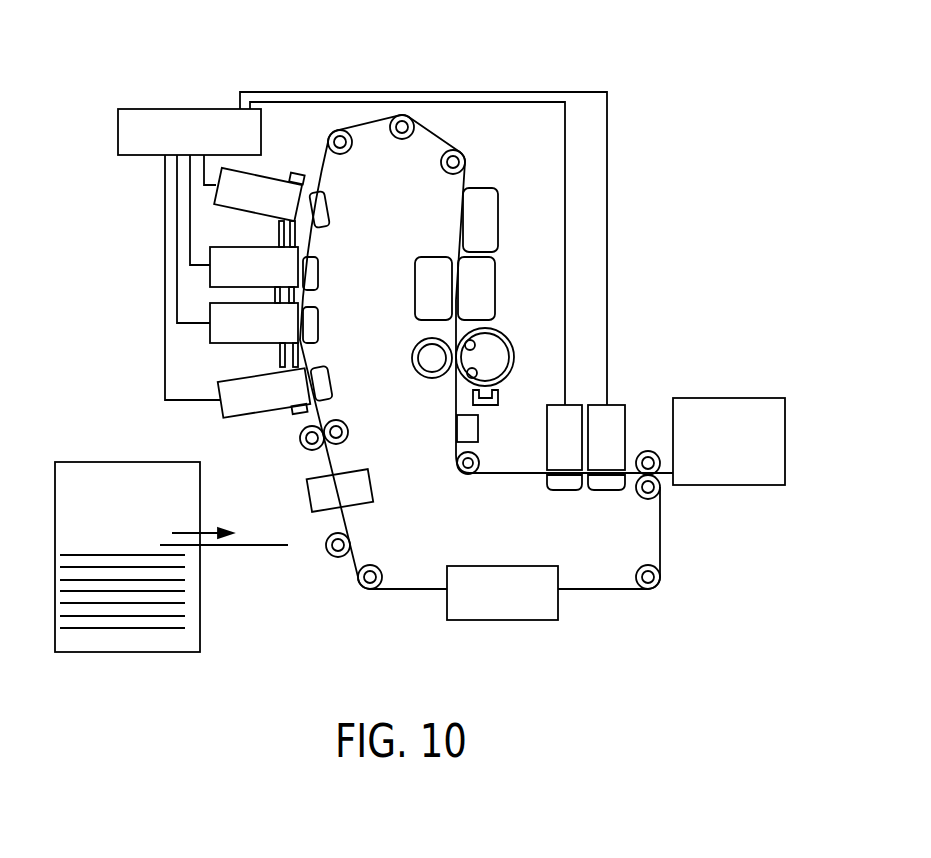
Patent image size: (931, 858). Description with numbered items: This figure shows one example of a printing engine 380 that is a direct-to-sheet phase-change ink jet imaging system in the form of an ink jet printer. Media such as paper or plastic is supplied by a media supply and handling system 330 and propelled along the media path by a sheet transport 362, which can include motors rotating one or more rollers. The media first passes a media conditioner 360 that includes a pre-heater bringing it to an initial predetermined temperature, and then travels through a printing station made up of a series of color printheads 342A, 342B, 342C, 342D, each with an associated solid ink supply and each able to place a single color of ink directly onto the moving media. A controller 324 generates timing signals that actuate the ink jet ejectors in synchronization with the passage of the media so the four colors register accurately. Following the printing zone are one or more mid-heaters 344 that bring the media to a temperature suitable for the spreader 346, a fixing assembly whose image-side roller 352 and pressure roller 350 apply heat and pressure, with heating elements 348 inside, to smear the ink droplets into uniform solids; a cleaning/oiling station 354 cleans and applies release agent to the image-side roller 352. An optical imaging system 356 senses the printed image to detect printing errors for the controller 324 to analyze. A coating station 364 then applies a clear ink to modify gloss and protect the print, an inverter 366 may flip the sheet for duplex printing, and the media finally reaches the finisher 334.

The controller 324 is at (180, 108).
The media supply and handling system 330 is at (95, 462).
The finisher 334 is at (725, 398).
The printhead 342A is at (220, 415).
The printhead 342B is at (210, 343).
The printhead 342C is at (210, 285).
The printhead 342D is at (212, 195).
The mid-heater 344 is at (415, 273).
The spreader 346 is at (540, 315).
The heating elements 348 is at (477, 371).
The pressure roller 350 is at (400, 380).
The image-side roller 352 is at (535, 370).
The cleaning/oiling station 354 is at (488, 405).
The optical imaging system 356 is at (468, 427).
The media conditioner 360 is at (305, 490).
The sheet transport 362 is at (440, 458).
The coating station 364 is at (628, 372).
The inverter 366 is at (560, 600).
The printing engine 380 is at (112, 273).